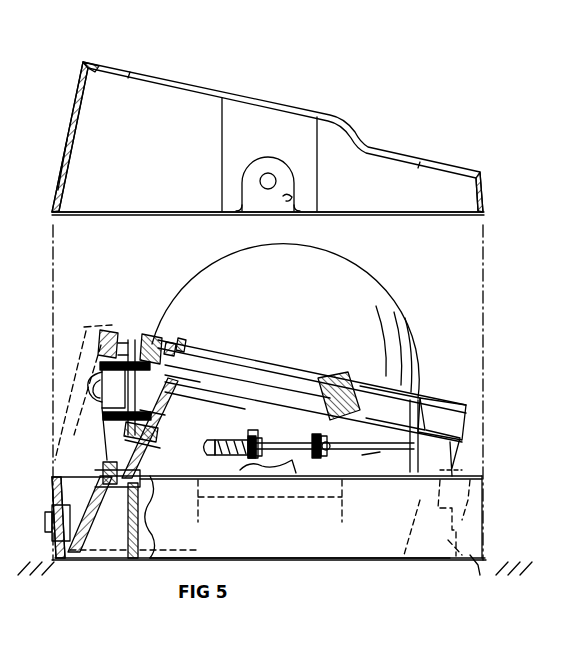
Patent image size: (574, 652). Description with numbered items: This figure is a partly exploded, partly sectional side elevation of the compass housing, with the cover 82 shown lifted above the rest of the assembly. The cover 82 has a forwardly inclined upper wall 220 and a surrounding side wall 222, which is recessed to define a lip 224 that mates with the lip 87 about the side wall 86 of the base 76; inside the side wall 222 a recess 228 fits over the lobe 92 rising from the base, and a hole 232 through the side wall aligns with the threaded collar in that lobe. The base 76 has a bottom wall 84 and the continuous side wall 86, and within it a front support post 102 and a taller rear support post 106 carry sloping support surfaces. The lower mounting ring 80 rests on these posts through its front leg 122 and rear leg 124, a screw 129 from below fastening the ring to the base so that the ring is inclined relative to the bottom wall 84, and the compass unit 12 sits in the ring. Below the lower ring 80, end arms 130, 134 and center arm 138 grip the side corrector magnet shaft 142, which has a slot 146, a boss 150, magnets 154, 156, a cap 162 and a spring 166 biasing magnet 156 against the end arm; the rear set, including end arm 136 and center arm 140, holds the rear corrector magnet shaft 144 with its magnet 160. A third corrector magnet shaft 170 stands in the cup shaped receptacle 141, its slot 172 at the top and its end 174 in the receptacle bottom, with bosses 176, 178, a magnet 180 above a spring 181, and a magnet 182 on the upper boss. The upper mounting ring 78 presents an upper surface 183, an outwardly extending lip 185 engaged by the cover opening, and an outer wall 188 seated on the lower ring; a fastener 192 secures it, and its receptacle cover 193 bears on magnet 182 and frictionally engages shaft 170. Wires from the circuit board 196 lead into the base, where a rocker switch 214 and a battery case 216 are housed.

The compass unit 12 is at (388, 282).
The base 76 is at (52, 489).
The upper mounting ring 78 is at (466, 415).
The lower mounting ring 80 is at (462, 445).
The cover 82 is at (485, 191).
The bottom wall 84 is at (378, 552).
The side wall 86 is at (484, 531).
The lip 87 is at (56, 473).
The lobe 92 is at (298, 470).
The support post 102 is at (470, 560).
The support post 106 is at (133, 550).
The leg 122 is at (470, 466).
The leg 124 is at (126, 453).
The screw 129 is at (114, 488).
The end arm 130 is at (362, 455).
The end arm 134 is at (238, 373).
The end arm 136 is at (102, 390).
The center arm 138 is at (300, 392).
The center arm 140 is at (92, 370).
The cup shaped receptacle 141 is at (106, 456).
The side corrector magnet shaft 142 is at (388, 436).
The rear corrector magnet shaft 144 is at (100, 410).
The slot 146 is at (415, 445).
The boss 150 is at (320, 458).
The magnet 154 is at (326, 458).
The magnet 156 is at (250, 458).
The magnet 160 is at (90, 386).
The cap 162 is at (210, 456).
The spring 166 is at (246, 436).
The corrector magnet shaft 170 is at (168, 395).
The slot 172 is at (128, 340).
The end 174 is at (135, 445).
The boss 176 is at (145, 413).
The boss 178 is at (166, 373).
The magnet 180 is at (108, 422).
The spring 181 is at (158, 432).
The magnet 182 is at (170, 346).
The upper surface 183 is at (258, 352).
The lip 185 is at (100, 332).
The outer wall 188 is at (204, 356).
The fastener 192 is at (345, 390).
The receptacle cover 193 is at (150, 336).
The circuit board 196 is at (475, 502).
The rocker switch 214 is at (44, 520).
The battery case 216 is at (322, 560).
The upper wall 220 is at (90, 66).
The side wall 222 is at (71, 116).
The lip 224 is at (484, 212).
The recess 228 is at (288, 198).
The hole 232 is at (268, 181).